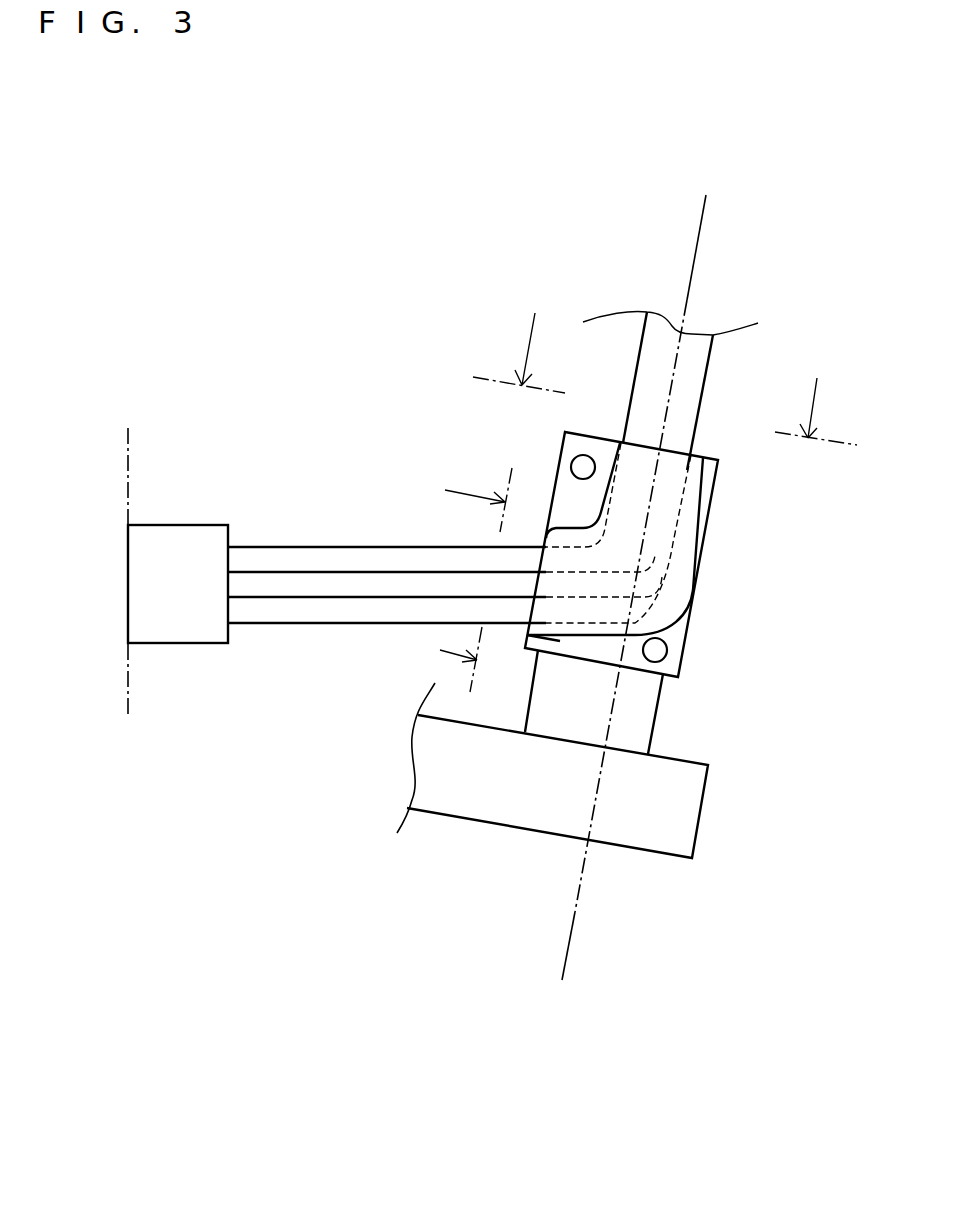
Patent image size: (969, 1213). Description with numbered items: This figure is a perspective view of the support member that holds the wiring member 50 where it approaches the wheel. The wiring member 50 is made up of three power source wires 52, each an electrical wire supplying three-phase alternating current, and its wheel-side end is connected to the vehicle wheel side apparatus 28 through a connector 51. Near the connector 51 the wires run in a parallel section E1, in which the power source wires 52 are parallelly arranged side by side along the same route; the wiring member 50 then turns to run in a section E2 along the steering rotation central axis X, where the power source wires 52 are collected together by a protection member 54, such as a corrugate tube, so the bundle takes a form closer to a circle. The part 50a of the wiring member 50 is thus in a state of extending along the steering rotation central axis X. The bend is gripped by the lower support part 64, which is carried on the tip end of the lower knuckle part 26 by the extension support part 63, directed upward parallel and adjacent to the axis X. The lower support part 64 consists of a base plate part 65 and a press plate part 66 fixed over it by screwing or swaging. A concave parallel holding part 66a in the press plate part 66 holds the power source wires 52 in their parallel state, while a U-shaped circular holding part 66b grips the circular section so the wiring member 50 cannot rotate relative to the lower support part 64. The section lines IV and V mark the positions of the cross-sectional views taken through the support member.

The lower knuckle part 26 is at (662, 858).
The vehicle wheel side apparatus 28 is at (128, 461).
The wiring member 50 is at (714, 407).
The part of the wiring member 50a is at (698, 433).
The connector 51 is at (177, 525).
The power source wire 52 is at (290, 623).
The protection member 54 is at (645, 367).
The extension support part 63 is at (657, 715).
The lower support part 64 is at (755, 603).
The base plate part 65 is at (672, 617).
The press plate part 66 is at (677, 633).
The parallel holding part 66a is at (565, 608).
The circular holding part 66b is at (673, 487).
The parallel section E1 is at (300, 545).
The section along the steering rotation central axis E2 is at (709, 357).
The steering rotation central axis X is at (570, 942).
The IV-IV section line IV is at (662, 379).
The V-V section line V is at (476, 574).